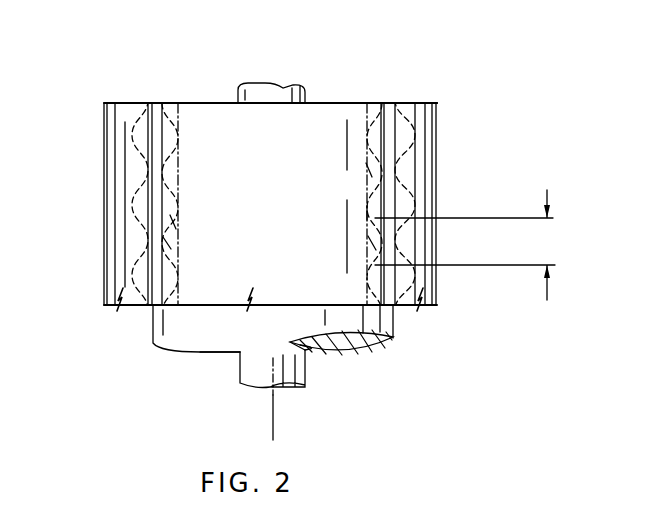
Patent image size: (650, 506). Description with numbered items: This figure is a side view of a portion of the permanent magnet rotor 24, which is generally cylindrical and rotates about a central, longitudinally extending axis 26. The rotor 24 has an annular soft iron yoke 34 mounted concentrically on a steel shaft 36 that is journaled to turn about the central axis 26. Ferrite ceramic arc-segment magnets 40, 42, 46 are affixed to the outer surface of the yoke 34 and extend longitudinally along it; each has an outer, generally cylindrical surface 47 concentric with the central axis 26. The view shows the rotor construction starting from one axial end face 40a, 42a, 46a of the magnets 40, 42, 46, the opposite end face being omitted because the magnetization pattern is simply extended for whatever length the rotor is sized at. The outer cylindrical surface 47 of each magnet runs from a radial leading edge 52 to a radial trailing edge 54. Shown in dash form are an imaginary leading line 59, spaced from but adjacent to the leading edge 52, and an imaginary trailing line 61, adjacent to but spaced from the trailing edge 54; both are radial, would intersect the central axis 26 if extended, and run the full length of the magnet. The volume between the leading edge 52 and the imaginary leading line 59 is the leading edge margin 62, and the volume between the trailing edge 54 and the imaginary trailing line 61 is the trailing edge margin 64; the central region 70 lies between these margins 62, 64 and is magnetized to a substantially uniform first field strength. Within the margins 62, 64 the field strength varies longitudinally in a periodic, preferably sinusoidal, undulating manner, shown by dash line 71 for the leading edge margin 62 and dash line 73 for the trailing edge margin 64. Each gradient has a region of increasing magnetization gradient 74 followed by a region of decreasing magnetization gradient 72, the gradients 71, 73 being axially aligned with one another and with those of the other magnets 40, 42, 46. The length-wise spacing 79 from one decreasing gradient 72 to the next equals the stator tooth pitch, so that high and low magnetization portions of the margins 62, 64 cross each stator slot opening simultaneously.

The rotor 24 is at (455, 167).
The central axis 26 is at (275, 425).
The yoke 34 is at (186, 340).
The shaft 36 is at (290, 362).
The magnet 40 is at (345, 92).
The axial end face 40a is at (315, 100).
The magnet 42 is at (445, 125).
The axial end face 42a is at (437, 102).
The magnet 46 is at (98, 233).
The axial end face 46a is at (108, 103).
The outer cylindrical surface 47 is at (213, 120).
The leading edge 52 is at (162, 265).
The trailing edge 54 is at (383, 258).
The imaginary leading line 59 is at (178, 188).
The imaginary trailing line 61 is at (372, 190).
The leading edge margin 62 is at (168, 105).
The trailing edge margin 64 is at (373, 102).
The central region 70 is at (228, 293).
The dash line 71 is at (165, 162).
The decreasing magnetization gradient region 72 is at (173, 222).
The dash line 73 is at (372, 213).
The increasing magnetization gradient region 74 is at (167, 243).
The length-wise spacing 79 is at (547, 192).